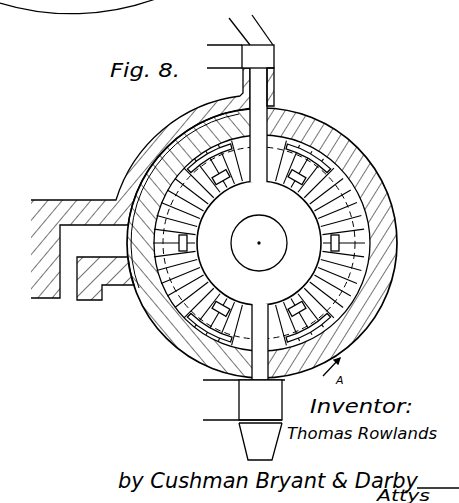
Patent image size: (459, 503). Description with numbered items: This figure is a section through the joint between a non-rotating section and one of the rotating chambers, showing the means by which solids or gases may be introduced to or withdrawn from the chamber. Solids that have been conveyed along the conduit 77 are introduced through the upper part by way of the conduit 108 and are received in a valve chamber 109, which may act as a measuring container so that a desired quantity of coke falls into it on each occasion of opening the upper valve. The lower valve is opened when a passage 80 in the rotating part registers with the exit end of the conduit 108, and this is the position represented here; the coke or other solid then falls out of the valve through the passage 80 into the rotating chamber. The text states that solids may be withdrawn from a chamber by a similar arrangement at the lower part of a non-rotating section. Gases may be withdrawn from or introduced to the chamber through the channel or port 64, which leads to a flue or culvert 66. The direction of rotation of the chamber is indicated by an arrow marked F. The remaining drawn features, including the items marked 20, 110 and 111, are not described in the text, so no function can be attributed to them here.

The blocks 20 is at (301, 177).
The channel or port 64 is at (180, 152).
The flue or culvert 66 is at (105, 267).
The conduit 77 is at (262, 24).
The passage 80 is at (305, 137).
The conduit 108 is at (257, 123).
The valve chamber 109 is at (262, 63).
The side pipe 110 is at (275, 45).
The arcuate slots 111 is at (335, 158).